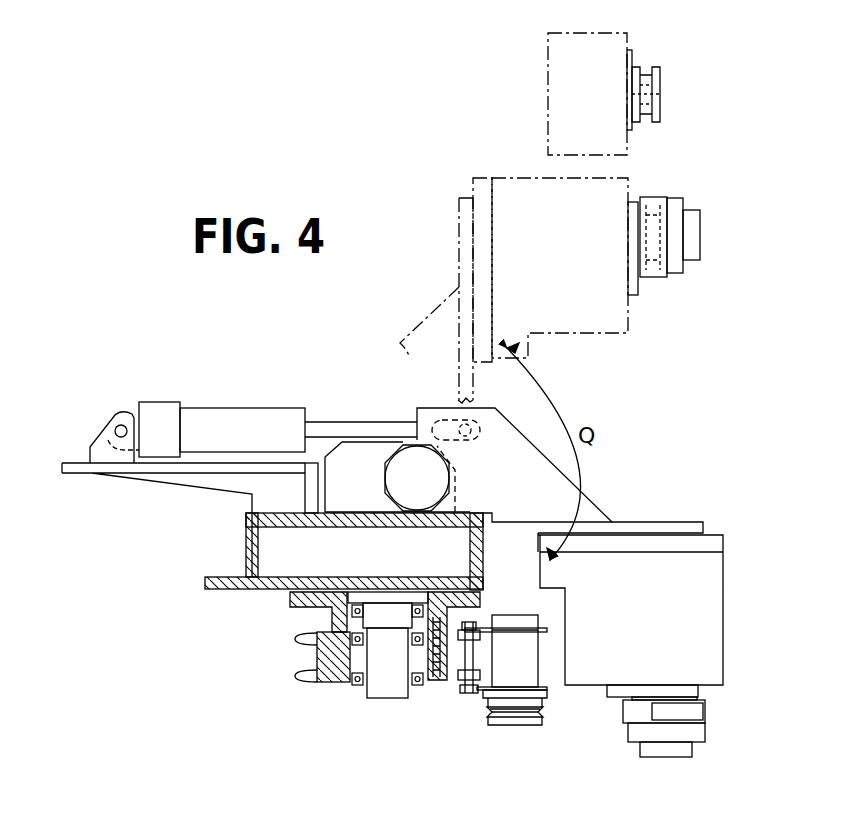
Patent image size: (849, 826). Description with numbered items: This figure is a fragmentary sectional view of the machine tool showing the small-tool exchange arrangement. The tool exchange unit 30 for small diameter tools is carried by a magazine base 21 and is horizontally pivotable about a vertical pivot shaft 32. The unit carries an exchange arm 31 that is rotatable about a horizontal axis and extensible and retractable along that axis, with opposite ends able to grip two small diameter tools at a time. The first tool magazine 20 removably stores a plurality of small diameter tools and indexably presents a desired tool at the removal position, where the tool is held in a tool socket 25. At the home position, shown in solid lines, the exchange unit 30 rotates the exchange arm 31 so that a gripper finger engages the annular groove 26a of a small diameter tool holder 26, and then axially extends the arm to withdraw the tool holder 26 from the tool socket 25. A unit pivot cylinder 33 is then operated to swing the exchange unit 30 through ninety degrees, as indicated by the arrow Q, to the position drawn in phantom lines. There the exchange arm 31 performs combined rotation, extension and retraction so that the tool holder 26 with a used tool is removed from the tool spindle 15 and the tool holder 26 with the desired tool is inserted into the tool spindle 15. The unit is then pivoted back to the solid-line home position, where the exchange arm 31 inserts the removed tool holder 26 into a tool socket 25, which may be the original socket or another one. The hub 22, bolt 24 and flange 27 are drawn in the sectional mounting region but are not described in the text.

The tool spindle 15 is at (636, 128).
The first tool magazine 20 is at (243, 597).
The magazine base 21 is at (209, 578).
The hub 22 is at (332, 673).
The bolt 24 is at (467, 688).
The tool socket 25 is at (512, 618).
The small diameter tool holder 26 is at (660, 81).
The annular groove 26a is at (545, 722).
The flange 27 is at (305, 606).
The tool exchange unit 30 is at (728, 567).
The exchange arm 31 is at (700, 712).
The vertical pivot shaft 32 is at (395, 482).
The unit pivot cylinder 33 is at (242, 418).